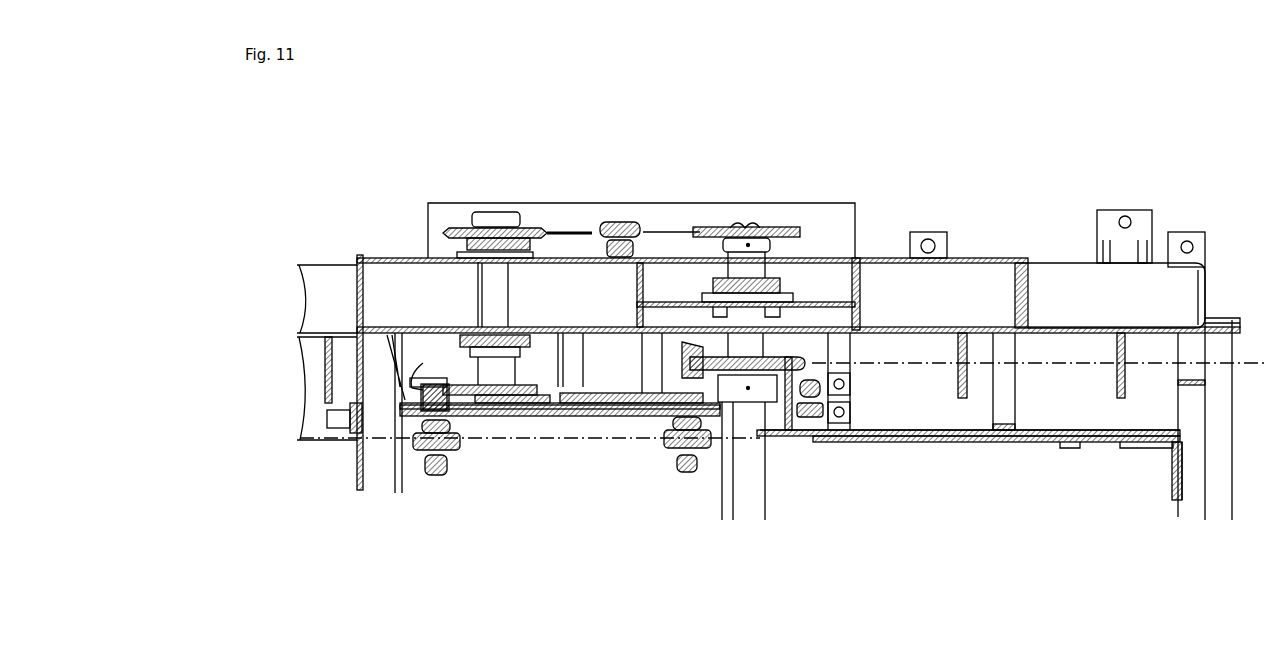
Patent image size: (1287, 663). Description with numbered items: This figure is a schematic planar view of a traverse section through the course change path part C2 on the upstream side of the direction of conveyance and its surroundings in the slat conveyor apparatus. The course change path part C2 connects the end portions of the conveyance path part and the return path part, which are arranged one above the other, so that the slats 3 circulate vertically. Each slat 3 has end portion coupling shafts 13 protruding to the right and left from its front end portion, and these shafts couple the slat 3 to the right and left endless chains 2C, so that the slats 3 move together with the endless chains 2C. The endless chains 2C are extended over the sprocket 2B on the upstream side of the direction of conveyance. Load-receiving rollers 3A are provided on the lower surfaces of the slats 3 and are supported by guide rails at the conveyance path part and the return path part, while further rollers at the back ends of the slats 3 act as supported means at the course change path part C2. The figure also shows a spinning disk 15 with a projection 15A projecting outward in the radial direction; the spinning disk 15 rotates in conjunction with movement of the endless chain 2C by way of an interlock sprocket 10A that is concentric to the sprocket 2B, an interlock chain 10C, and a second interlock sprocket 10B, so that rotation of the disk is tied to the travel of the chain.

The interlock sprocket 10A is at (771, 226).
The interlock sprocket 10B is at (527, 215).
The interlock chain 10C is at (664, 228).
The course change path part C2 is at (383, 327).
The projection 15A is at (463, 387).
The slat 3 is at (548, 423).
The end portion coupling shaft 13 is at (682, 382).
The spinning disk 15 is at (517, 417).
The load-receiving roller 3A is at (447, 450).
The sprocket 2B is at (787, 437).
The endless chain 2C is at (933, 365).